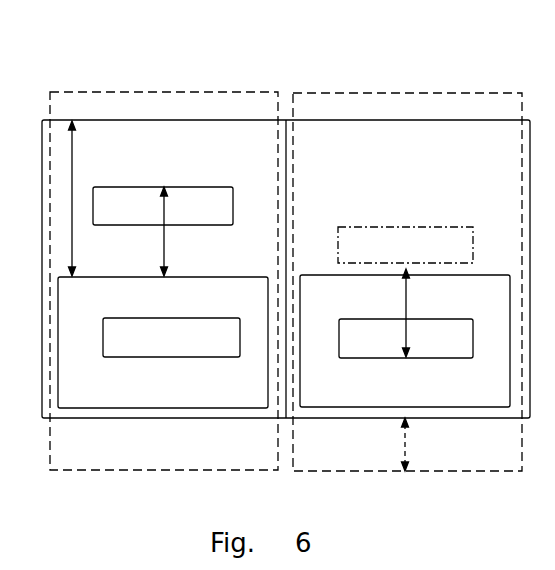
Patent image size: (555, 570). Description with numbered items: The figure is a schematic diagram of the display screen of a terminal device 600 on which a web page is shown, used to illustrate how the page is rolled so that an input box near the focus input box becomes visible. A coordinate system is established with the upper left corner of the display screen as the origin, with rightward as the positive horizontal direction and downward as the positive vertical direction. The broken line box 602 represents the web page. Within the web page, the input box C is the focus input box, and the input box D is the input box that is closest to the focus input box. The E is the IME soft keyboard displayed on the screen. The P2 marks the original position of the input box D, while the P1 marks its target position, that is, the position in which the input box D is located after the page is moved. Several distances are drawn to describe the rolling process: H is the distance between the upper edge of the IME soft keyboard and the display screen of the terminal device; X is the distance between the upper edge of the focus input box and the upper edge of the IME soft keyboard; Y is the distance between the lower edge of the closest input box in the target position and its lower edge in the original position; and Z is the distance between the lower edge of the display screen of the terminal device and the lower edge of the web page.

The terminal device 600 is at (67, 119).
The broken line box 602 is at (207, 92).
The input box C is at (127, 187).
The IME soft keyboard E is at (231, 277).
The input box D is at (177, 357).
The distance H is at (81, 198).
The distance X is at (173, 231).
The target position P1 is at (402, 227).
The original position P2 is at (438, 358).
The distance Y is at (413, 313).
The distance Z is at (413, 447).